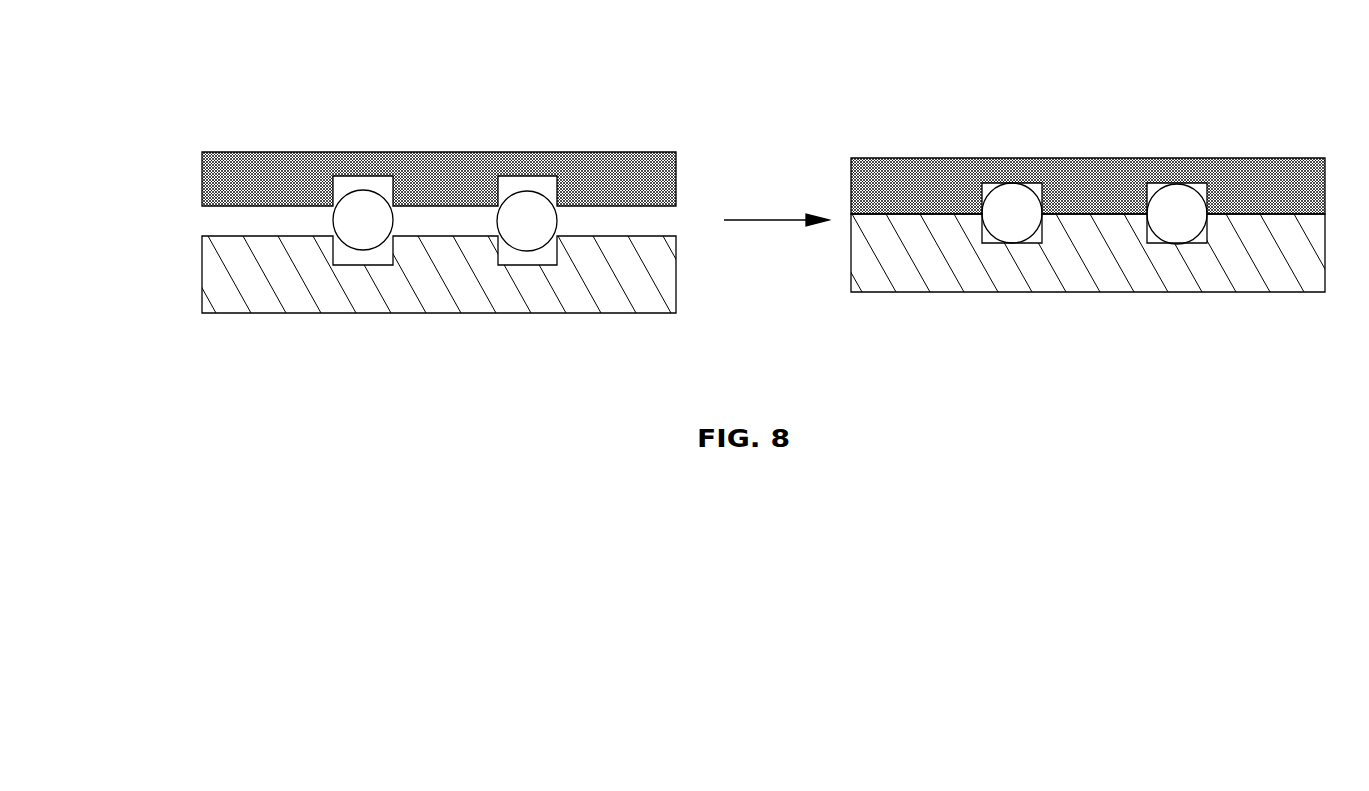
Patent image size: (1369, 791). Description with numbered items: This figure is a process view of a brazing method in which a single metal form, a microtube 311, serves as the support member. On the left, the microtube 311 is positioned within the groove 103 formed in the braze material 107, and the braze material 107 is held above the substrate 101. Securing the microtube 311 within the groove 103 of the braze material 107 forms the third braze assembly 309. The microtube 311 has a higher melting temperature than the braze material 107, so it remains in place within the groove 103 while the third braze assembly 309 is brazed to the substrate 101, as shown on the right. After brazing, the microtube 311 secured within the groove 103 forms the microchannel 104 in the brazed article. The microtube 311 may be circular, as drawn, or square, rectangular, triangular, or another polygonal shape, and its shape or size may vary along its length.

The third braze assembly 309 is at (754, 129).
The braze material 107 is at (584, 152).
The substrate 101 is at (578, 313).
The groove 103 is at (547, 187).
The microchannel 104 is at (1207, 244).
The microtube 311 is at (357, 232).